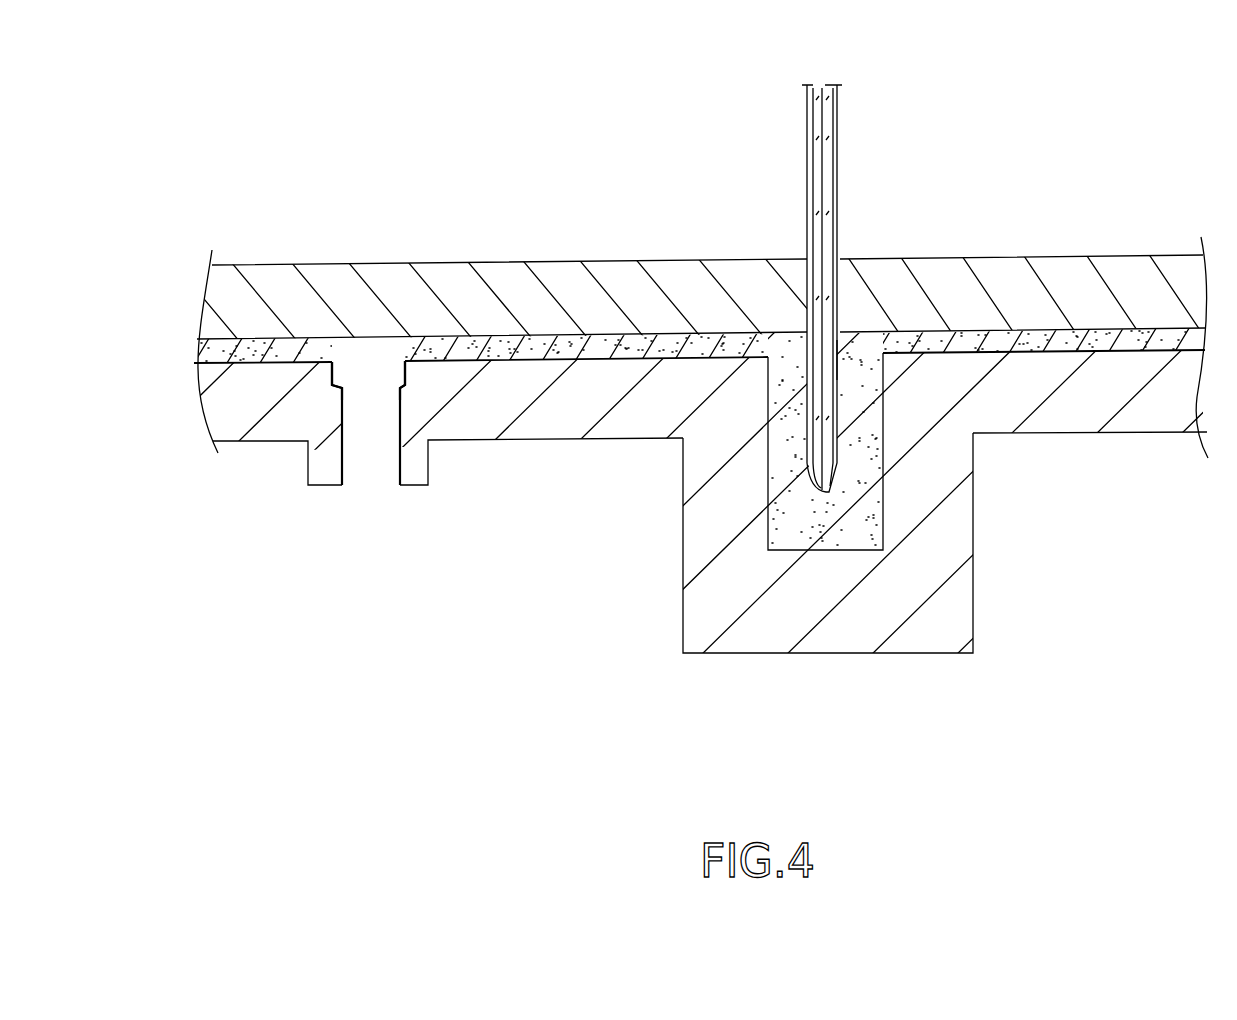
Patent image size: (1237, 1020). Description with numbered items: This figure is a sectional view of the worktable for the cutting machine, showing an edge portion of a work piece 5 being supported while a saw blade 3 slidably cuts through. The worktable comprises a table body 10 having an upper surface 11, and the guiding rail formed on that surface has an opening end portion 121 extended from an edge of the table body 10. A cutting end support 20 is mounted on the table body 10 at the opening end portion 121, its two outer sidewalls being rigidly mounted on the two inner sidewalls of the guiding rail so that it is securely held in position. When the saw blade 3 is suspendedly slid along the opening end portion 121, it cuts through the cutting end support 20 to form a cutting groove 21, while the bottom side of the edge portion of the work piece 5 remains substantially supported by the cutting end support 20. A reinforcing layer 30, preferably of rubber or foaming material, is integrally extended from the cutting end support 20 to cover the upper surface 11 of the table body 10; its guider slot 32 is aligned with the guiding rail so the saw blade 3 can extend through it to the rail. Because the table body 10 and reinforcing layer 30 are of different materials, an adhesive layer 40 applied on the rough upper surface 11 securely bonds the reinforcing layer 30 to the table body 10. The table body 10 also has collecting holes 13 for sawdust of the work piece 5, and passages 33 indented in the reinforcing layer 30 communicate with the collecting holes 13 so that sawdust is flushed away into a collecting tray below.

The saw blade 3 is at (830, 167).
The work piece 5 is at (530, 308).
The table body 10 is at (1043, 412).
The upper surface 11 is at (558, 372).
The collecting holes 13 is at (366, 460).
The cutting end support 20 is at (873, 502).
The cutting groove 21 is at (798, 442).
The reinforcing layer 30 is at (1036, 333).
The guider slot 32 is at (848, 356).
The passages 33 is at (348, 364).
The adhesive layer 40 is at (691, 342).
The opening end portion 121 is at (787, 517).